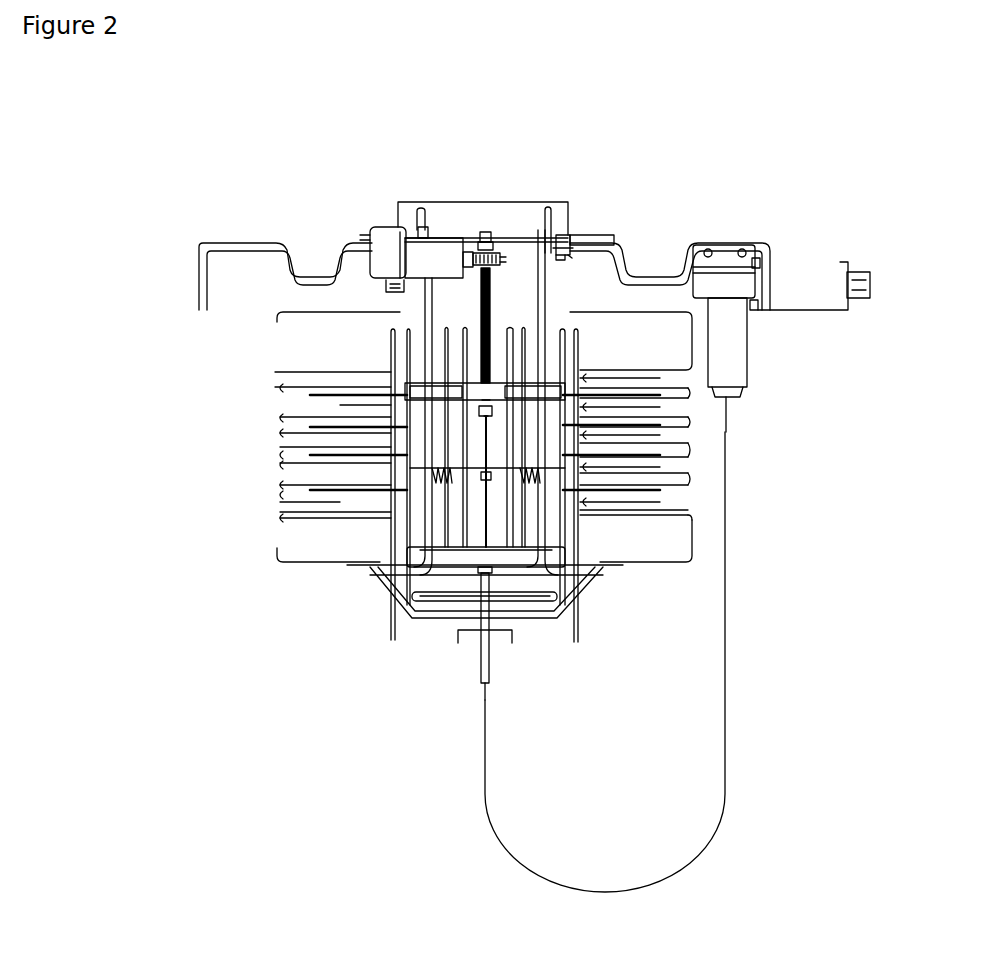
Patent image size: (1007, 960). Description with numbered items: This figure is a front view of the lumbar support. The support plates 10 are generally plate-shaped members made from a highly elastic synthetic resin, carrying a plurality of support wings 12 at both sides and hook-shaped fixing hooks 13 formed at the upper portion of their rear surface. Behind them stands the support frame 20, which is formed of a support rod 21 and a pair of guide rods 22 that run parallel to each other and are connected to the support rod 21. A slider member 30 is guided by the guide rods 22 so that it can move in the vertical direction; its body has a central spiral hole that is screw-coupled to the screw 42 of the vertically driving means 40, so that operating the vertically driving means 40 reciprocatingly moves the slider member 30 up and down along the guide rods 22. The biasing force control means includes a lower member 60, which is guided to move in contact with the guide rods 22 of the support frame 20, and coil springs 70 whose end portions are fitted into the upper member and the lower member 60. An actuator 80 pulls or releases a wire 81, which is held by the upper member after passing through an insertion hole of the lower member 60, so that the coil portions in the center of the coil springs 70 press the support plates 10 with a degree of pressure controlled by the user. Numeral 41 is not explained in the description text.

The support plates 10 is at (323, 586).
The support wings 12 is at (283, 392).
The fixing hooks 13 is at (566, 232).
The support frame 20 is at (431, 620).
The support rod 21 is at (598, 232).
The guide rods 22 is at (547, 282).
The slider member 30 is at (405, 392).
The vertically driving means 40 is at (452, 240).
The motor frame 41 is at (441, 202).
The screw 42 is at (491, 298).
The lower member 60 is at (513, 565).
The coil springs 70 is at (436, 474).
The actuator 80 is at (804, 243).
The wire 81 is at (483, 503).